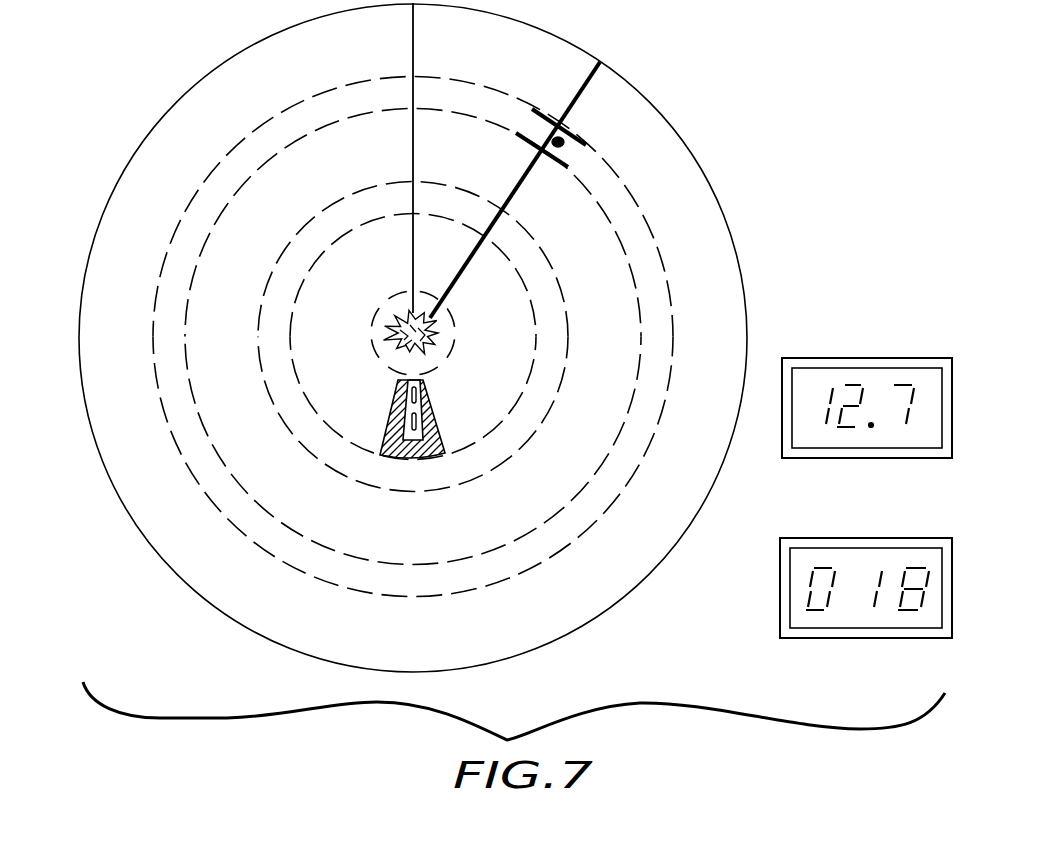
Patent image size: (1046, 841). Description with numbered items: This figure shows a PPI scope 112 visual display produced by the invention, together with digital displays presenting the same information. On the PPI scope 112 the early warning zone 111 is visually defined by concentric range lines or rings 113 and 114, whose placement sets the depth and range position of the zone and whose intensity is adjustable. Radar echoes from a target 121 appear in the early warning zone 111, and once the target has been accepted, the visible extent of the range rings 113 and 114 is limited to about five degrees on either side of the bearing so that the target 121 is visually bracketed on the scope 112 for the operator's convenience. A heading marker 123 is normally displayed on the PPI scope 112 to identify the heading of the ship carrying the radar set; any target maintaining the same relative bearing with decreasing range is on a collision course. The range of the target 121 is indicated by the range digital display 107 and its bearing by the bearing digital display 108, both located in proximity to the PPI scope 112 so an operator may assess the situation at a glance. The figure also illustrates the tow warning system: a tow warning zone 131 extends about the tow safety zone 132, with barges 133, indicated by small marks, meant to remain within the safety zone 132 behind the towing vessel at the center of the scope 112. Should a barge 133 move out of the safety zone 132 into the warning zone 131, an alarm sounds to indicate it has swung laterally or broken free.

The range digital display 107 is at (895, 320).
The bearing digital display 108 is at (780, 565).
The early warning zone 111 is at (651, 287).
The PPI scope 112 is at (671, 123).
The range ring 113 is at (533, 138).
The range ring 114 is at (547, 113).
The target 121 is at (562, 146).
The heading marker 123 is at (412, 36).
The tow warning zone 131 is at (446, 442).
The tow safety zone 132 is at (411, 421).
The barge 133 is at (418, 395).